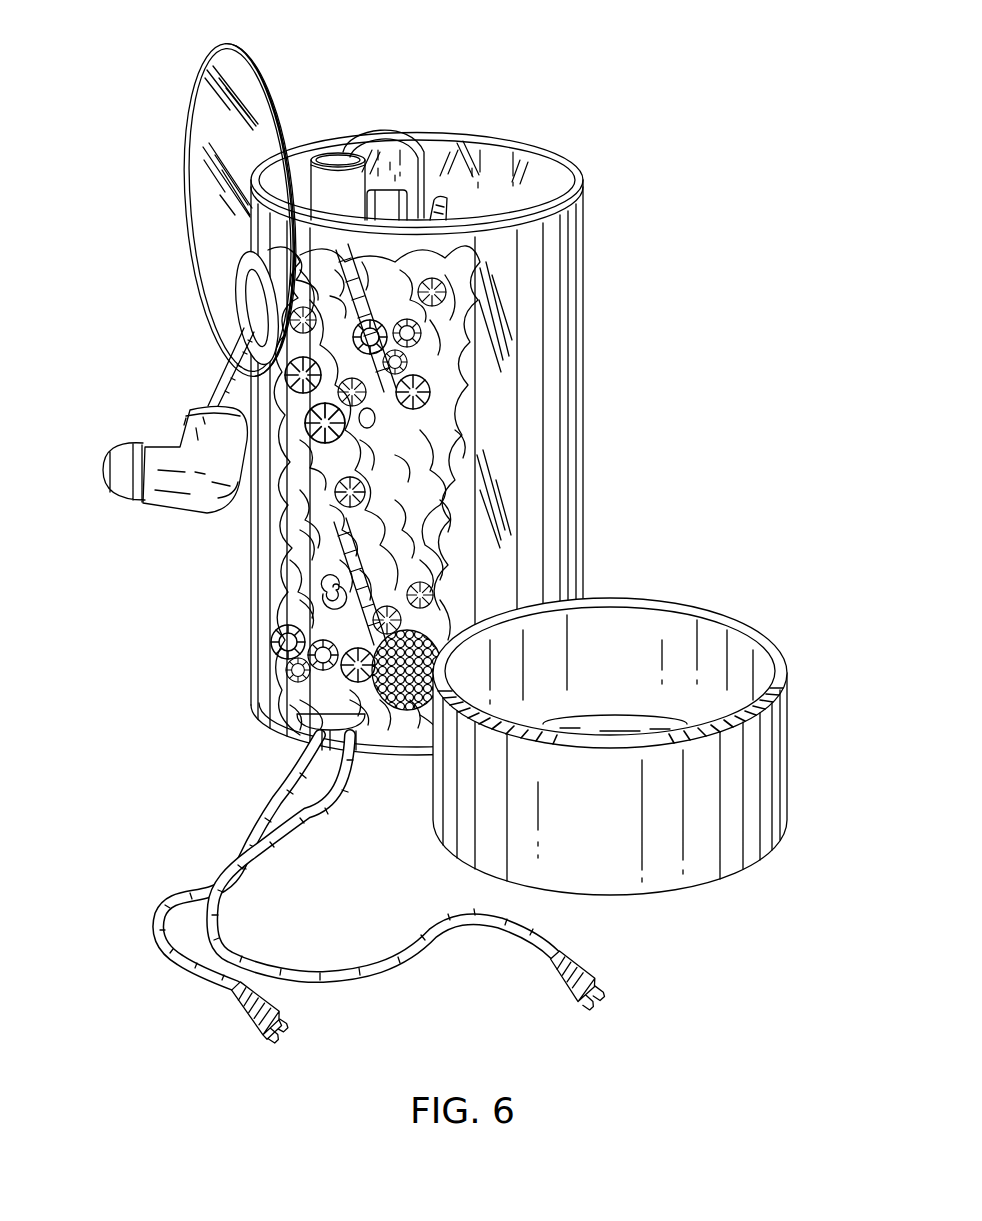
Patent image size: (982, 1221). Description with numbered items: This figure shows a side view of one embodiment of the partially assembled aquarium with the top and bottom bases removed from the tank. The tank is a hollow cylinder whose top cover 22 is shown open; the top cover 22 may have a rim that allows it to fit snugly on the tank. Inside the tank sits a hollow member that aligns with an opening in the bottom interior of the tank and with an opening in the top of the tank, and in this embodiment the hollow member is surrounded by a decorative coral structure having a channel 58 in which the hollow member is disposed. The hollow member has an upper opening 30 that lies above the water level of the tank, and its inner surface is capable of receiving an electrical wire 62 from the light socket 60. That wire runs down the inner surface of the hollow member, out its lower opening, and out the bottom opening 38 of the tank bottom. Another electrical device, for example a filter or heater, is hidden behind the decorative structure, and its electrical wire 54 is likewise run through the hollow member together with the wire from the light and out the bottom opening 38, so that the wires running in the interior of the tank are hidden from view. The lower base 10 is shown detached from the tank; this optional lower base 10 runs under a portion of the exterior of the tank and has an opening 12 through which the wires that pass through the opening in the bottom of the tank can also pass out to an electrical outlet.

The lower base 10 is at (773, 777).
The opening 12 is at (622, 725).
The top cover 22 is at (250, 115).
The upper opening 30 is at (348, 143).
The bottom opening 38 is at (257, 723).
The electrical wire 54 is at (337, 800).
The channel 58 is at (440, 198).
The light socket 60 is at (185, 495).
The electrical wire 62 is at (218, 368).